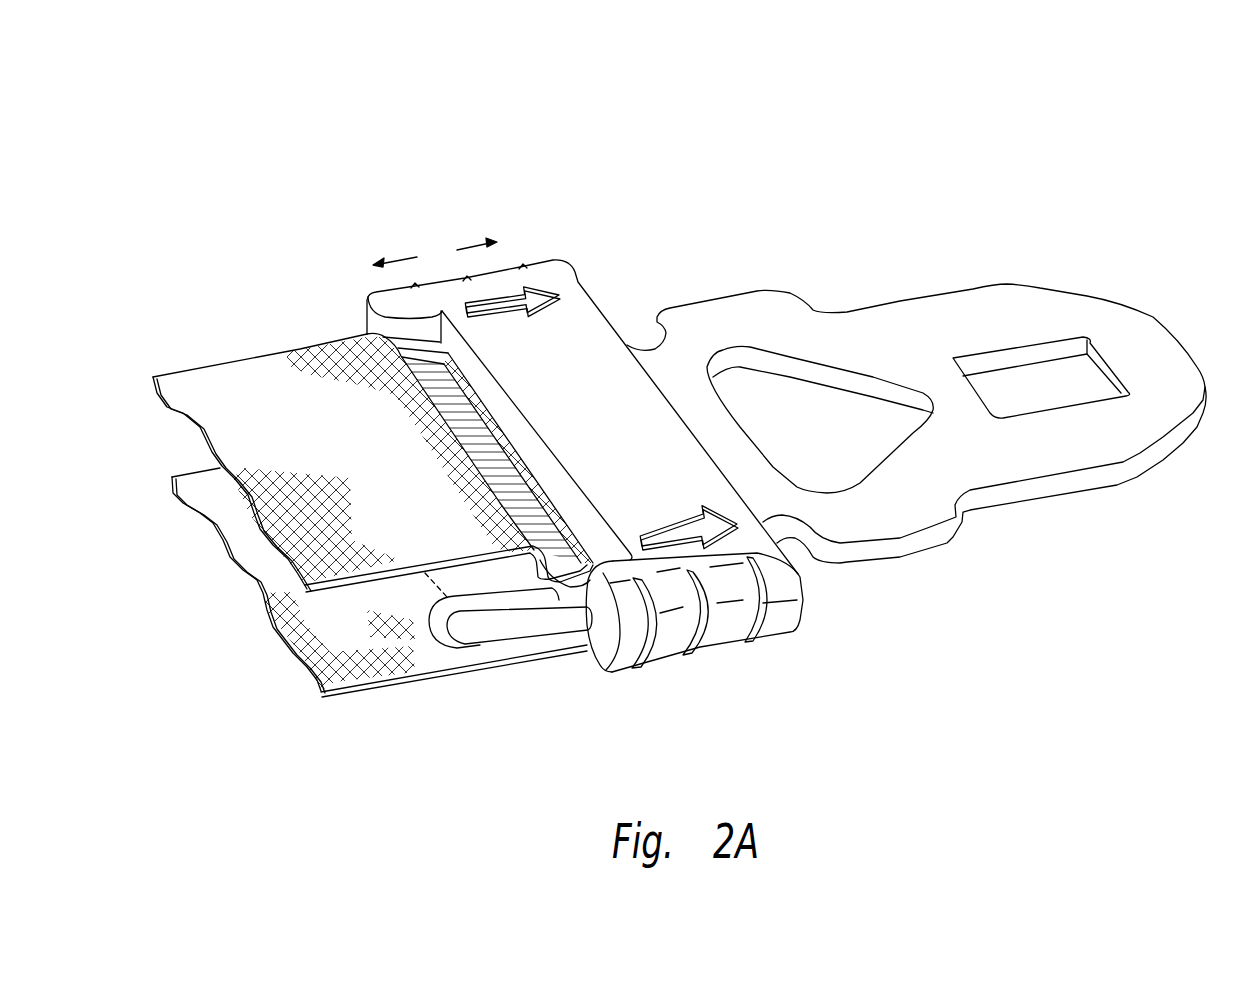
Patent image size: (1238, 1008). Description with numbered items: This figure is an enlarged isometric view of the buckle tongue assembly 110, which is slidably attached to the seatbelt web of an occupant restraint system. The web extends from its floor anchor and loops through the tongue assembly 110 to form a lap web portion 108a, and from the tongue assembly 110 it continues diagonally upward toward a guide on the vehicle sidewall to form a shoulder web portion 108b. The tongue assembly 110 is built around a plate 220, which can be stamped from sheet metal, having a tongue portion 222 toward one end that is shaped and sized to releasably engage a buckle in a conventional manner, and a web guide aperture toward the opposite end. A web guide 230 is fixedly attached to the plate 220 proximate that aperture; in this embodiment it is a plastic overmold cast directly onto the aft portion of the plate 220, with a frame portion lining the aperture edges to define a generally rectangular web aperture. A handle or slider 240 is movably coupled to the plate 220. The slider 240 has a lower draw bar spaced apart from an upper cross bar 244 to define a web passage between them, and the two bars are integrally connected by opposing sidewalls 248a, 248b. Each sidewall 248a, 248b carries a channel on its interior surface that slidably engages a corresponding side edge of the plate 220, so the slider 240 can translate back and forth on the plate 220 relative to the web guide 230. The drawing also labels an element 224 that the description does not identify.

The buckle tongue assembly 110 is at (383, 128).
The lap web portion 108a is at (347, 690).
The shoulder web portion 108b is at (222, 378).
The plate 220 is at (770, 305).
The tongue portion 222 is at (1002, 298).
The tongue bar 224 is at (525, 643).
The web guide 230 is at (407, 602).
The slider 240 is at (778, 628).
The cross bar 244 is at (572, 318).
The sidewall 248a is at (442, 290).
The sidewall 248b is at (660, 653).